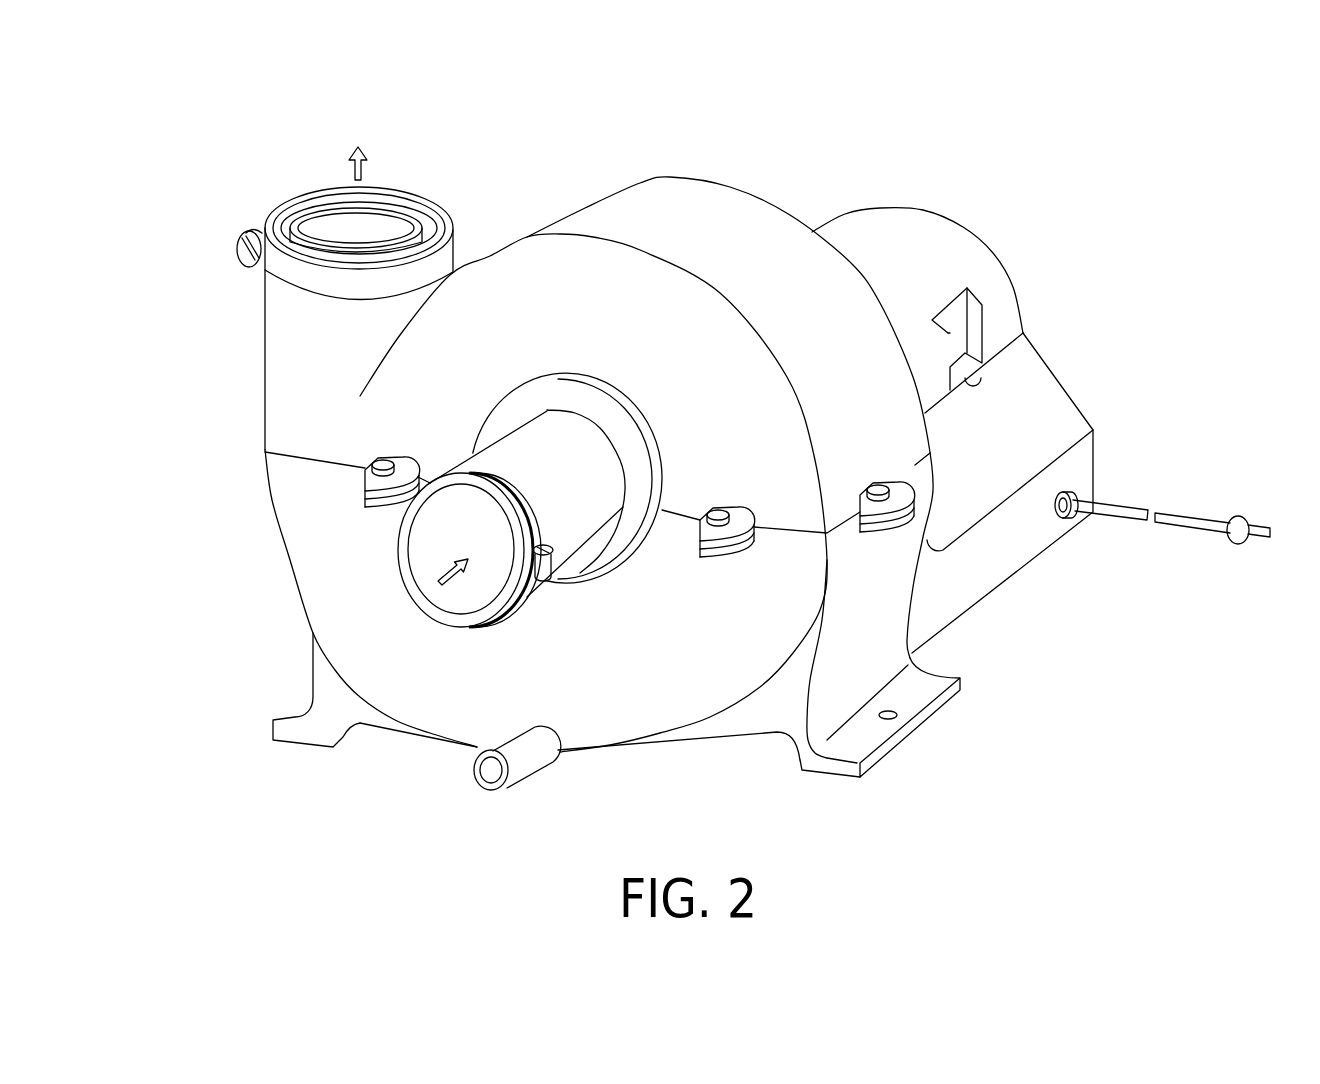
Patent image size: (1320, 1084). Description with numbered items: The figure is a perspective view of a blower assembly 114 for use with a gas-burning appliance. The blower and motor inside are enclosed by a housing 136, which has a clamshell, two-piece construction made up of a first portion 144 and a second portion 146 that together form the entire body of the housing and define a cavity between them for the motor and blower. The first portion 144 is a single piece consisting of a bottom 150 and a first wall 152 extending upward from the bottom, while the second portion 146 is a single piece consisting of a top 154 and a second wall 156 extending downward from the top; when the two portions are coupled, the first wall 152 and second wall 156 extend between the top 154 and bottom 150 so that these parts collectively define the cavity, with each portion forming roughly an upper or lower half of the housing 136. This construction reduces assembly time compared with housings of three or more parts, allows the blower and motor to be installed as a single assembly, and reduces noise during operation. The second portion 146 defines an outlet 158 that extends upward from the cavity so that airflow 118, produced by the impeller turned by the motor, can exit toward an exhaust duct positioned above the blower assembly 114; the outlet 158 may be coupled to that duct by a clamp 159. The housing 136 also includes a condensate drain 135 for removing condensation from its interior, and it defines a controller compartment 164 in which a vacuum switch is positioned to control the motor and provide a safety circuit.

The blower assembly 114 is at (1038, 187).
The airflow 118 is at (443, 578).
The condensate drain 135 is at (520, 760).
The housing 136 is at (895, 253).
The first portion 144 is at (447, 690).
The second portion 146 is at (547, 272).
The bottom 150 is at (647, 747).
The first wall 152 is at (352, 596).
The top 154 is at (627, 215).
The second wall 156 is at (770, 426).
The outlet 158 is at (322, 238).
The clamp 159 is at (246, 238).
The controller compartment 164 is at (1073, 470).